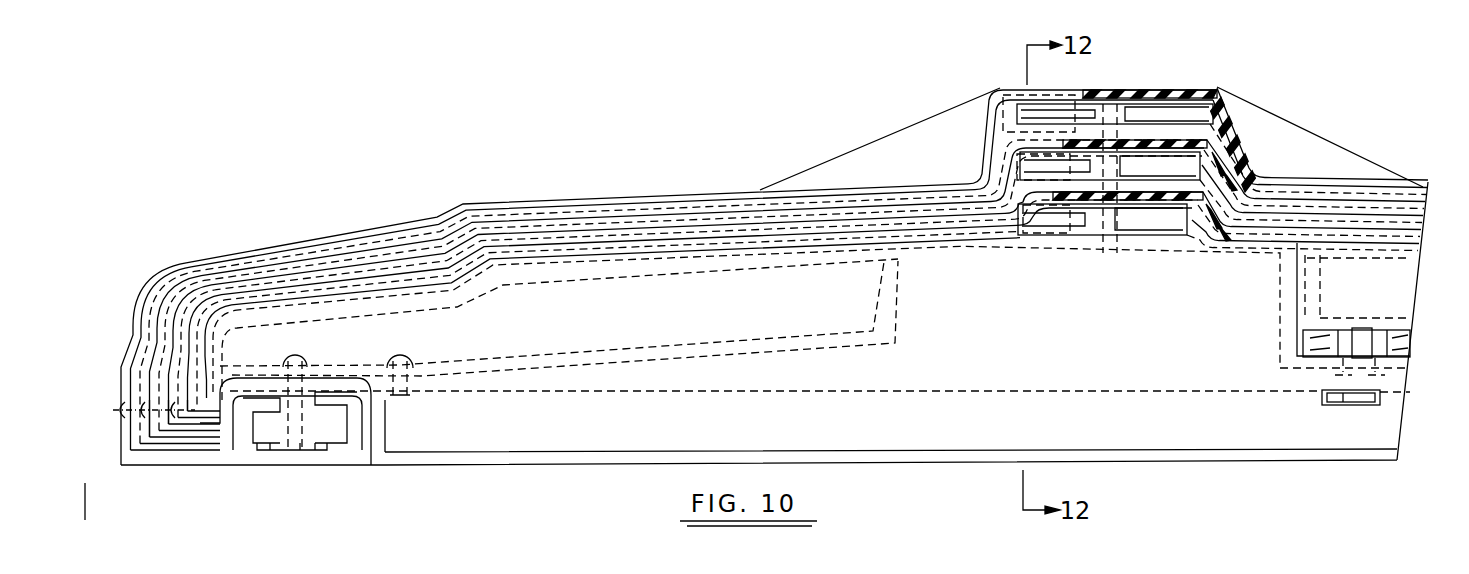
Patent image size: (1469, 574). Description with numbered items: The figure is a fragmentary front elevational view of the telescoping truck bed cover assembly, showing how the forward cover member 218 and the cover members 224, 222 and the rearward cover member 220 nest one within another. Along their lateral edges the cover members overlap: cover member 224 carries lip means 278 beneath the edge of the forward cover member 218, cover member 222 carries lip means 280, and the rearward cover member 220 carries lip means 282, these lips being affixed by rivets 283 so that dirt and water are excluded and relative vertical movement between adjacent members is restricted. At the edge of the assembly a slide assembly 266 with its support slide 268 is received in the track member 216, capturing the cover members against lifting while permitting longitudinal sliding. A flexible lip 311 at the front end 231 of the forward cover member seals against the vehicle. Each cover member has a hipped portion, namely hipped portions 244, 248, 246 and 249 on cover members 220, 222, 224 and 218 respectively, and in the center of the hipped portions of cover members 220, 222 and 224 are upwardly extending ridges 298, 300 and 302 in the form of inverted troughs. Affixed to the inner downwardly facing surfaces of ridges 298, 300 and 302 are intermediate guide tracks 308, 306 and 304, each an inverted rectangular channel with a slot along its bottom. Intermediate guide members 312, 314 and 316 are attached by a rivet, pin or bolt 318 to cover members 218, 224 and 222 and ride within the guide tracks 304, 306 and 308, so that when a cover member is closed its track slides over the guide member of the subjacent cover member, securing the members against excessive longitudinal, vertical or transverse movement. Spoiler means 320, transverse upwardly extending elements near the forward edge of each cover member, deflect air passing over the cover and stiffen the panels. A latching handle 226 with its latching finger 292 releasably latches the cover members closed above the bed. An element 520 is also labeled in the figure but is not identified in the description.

The rearward cover member 220 is at (226, 256).
The cover member 222 is at (268, 266).
The cover member 224 is at (316, 283).
The forward cover member 218 is at (365, 296).
The front end 231 is at (482, 323).
The spoiler means 320 is at (572, 257).
The hipped portion 244 is at (633, 208).
The hipped portion 248 is at (663, 227).
The hipped portion 246 is at (718, 243).
The hipped portion 249 is at (758, 253).
The cover 520 is at (920, 143).
The intermediate guide member 314 is at (1088, 163).
The intermediate guide member 316 is at (1152, 117).
The ridge 298 is at (1218, 85).
The intermediate guide track 308 is at (1230, 103).
The ridge 300 is at (1235, 135).
The intermediate guide track 306 is at (1223, 163).
The ridge 302 is at (1208, 187).
The intermediate guide member 312 is at (1057, 240).
The rivet, pin or bolt 318 is at (1117, 257).
The intermediate guide track 304 is at (1187, 232).
The latching handle 226 is at (1360, 333).
The latching finger 292 is at (1355, 395).
The slide assembly 266 is at (343, 432).
The track member 216 is at (300, 458).
The support slide 268 is at (333, 450).
The flexible lip 311 is at (460, 462).
The rivets 283 is at (95, 483).
The lip means 282 is at (167, 457).
The lip means 280 is at (190, 447).
The lip means 278 is at (212, 433).